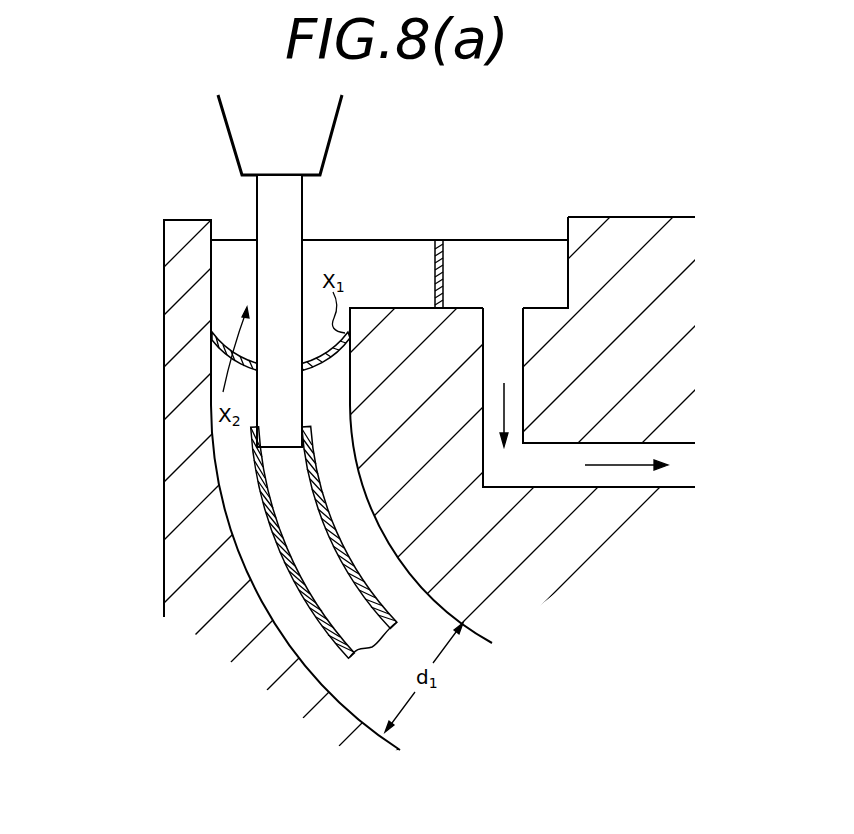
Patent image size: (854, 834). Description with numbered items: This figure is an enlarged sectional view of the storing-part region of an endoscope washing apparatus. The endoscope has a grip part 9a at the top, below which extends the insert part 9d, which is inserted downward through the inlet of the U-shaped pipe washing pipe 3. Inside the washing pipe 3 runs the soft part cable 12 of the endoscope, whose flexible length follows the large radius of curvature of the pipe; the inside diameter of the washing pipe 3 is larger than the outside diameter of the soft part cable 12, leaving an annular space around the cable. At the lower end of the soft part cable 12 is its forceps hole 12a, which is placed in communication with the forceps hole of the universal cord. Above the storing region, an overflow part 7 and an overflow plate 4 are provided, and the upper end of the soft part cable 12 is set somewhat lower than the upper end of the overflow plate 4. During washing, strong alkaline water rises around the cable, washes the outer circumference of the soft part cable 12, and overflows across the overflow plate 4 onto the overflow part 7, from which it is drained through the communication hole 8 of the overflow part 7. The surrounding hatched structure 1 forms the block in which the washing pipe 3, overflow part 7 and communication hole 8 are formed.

The mold body 1 is at (623, 212).
The U-shaped pipe washing pipe 3 is at (276, 611).
The overflow plate 4 is at (492, 272).
The overflow part 7 is at (528, 258).
The communication hole 8 is at (525, 377).
The grip part 9a is at (335, 120).
The insert part 9d is at (302, 203).
The soft part cable 12 is at (332, 655).
The forceps hole 12a is at (380, 615).